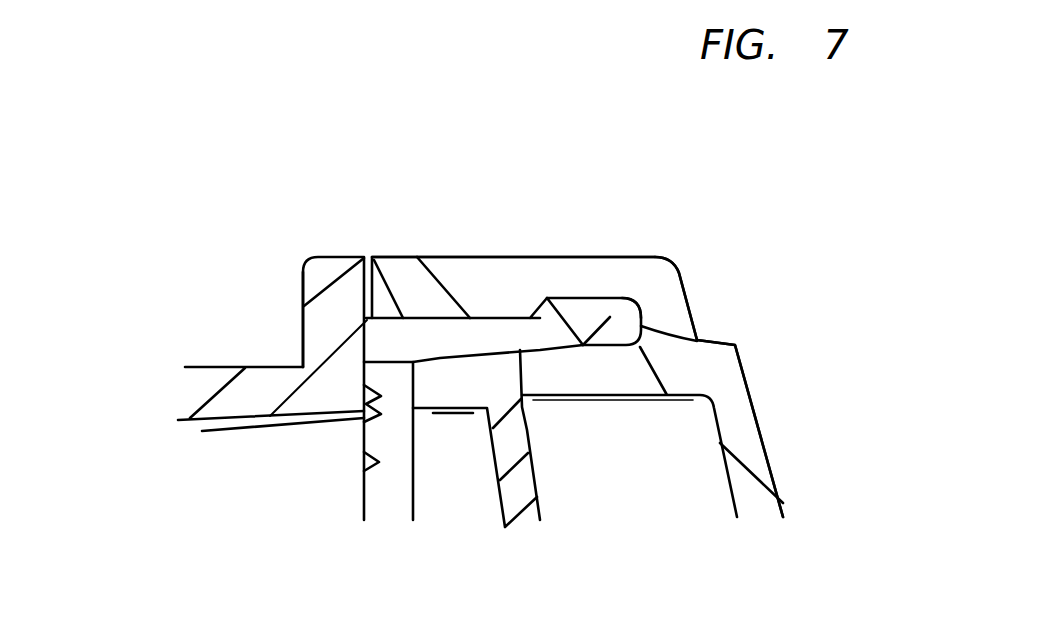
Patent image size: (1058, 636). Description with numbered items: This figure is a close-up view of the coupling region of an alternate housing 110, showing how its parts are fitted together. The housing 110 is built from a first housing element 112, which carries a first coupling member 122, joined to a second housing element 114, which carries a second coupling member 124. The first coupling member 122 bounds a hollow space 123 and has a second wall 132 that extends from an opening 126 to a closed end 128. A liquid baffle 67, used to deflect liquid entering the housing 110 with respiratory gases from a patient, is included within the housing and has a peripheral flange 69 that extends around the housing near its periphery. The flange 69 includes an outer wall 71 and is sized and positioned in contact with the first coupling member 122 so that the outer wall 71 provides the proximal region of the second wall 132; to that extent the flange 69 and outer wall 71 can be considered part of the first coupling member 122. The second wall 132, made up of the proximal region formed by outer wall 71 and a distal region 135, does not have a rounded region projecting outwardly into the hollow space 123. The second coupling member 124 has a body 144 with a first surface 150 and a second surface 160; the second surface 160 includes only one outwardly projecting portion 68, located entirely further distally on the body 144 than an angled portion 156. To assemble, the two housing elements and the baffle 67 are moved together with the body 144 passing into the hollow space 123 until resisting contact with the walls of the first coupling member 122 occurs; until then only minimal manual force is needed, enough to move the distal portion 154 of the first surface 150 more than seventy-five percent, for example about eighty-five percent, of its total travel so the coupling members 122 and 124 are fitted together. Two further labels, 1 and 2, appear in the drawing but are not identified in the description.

The housing 110 is at (230, 200).
The first housing element 112 is at (677, 232).
The second housing element 114 is at (207, 362).
The first coupling member 122 is at (583, 257).
The hollow space 123 is at (633, 310).
The second coupling member 124 is at (303, 281).
The opening 126 is at (378, 312).
The closed end 128 is at (737, 345).
The outer surface 1 is at (673, 313).
The side wall 2 is at (313, 322).
The second wall 132 is at (530, 352).
The distal region 135 is at (600, 346).
The body 144 is at (445, 337).
The first surface 150 is at (403, 319).
The distal portion 154 is at (570, 300).
The angled portion 156 is at (550, 350).
The second surface 160 is at (493, 353).
The liquid baffle 67 is at (545, 497).
The outwardly projecting portion 68 is at (543, 300).
The peripheral flange 69 is at (475, 378).
The outer wall 71 is at (470, 318).